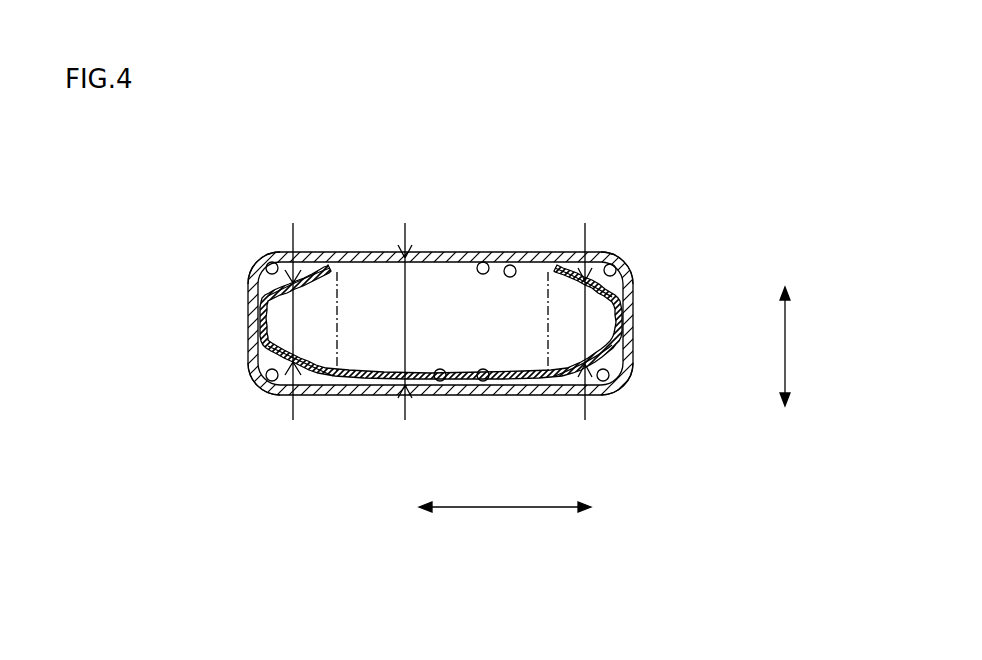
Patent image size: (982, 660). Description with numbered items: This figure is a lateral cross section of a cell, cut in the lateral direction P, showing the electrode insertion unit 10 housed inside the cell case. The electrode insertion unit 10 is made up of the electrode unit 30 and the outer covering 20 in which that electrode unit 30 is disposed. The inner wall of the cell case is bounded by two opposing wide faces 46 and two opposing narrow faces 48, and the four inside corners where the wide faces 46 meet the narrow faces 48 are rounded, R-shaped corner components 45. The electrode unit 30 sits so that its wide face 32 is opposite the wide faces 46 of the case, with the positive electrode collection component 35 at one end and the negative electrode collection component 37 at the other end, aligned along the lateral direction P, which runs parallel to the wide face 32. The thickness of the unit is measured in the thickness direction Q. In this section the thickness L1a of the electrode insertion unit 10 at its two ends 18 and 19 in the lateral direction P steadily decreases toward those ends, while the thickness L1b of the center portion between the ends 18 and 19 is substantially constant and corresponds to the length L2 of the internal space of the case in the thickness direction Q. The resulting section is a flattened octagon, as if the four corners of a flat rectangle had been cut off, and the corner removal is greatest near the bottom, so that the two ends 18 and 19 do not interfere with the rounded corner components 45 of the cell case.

The electrode insertion unit 10 is at (440, 357).
The outer covering 20 is at (348, 390).
The electrode unit 30 is at (446, 327).
The wide face 32 is at (518, 265).
The wide faces 46 is at (479, 263).
The narrow faces 48 is at (262, 320).
The corner components 45 is at (273, 256).
The end 19 is at (260, 297).
The negative electrode collection component 37 is at (258, 362).
The end 18 is at (620, 302).
The positive electrode collection component 35 is at (630, 355).
The thickness at the two ends L1a is at (314, 256).
The thickness of the center portion L1b is at (405, 310).
The length in the thickness direction of the internal space L2 is at (570, 267).
The lateral direction P is at (498, 510).
The thickness direction Q is at (787, 345).